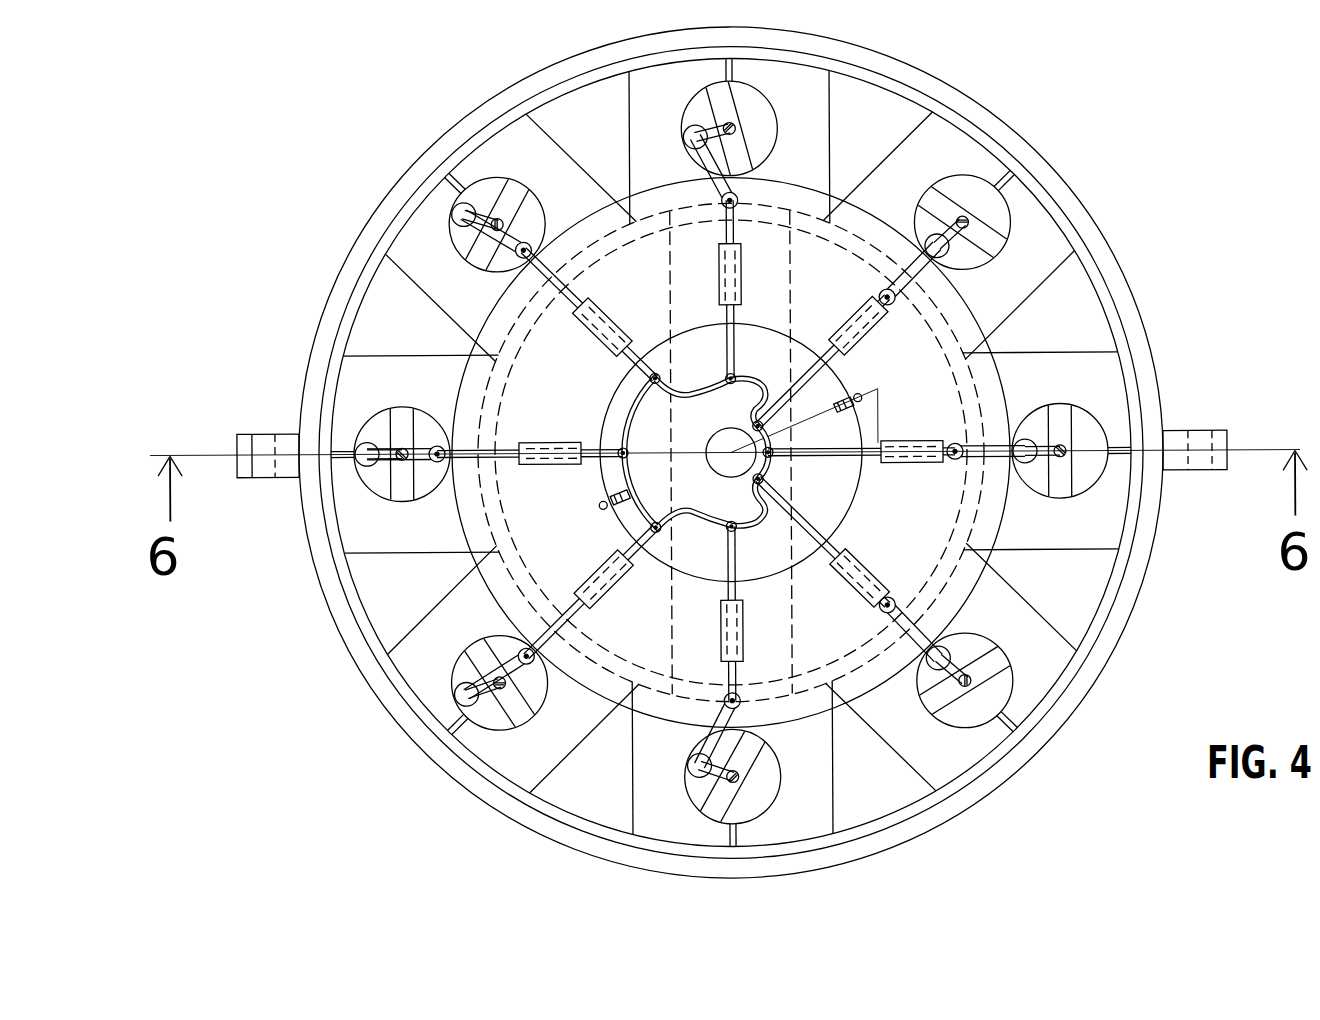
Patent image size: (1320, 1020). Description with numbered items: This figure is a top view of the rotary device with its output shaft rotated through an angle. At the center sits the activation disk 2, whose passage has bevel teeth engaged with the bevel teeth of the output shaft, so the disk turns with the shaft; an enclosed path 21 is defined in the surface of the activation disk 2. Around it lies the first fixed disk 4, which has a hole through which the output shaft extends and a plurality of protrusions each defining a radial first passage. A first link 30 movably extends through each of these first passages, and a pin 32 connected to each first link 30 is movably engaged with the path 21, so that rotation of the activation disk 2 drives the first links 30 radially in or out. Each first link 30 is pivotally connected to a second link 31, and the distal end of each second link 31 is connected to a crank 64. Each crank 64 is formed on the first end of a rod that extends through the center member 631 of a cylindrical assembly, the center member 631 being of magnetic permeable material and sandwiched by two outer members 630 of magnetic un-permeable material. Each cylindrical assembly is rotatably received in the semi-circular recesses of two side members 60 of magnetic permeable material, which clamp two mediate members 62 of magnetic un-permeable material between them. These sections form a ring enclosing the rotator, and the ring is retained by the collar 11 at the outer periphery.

The activation disk 2 is at (772, 480).
The first fixed disk 4 is at (997, 397).
The collar 11 is at (1073, 697).
The enclosed path 21 is at (775, 490).
The first link 30 is at (760, 424).
The second link 31 is at (958, 275).
The pin 32 is at (770, 466).
The side member 60 is at (962, 146).
The mediate member 62 is at (1001, 163).
The crank 64 is at (942, 225).
The outer member 630 is at (1000, 222).
The center member 631 is at (1006, 254).